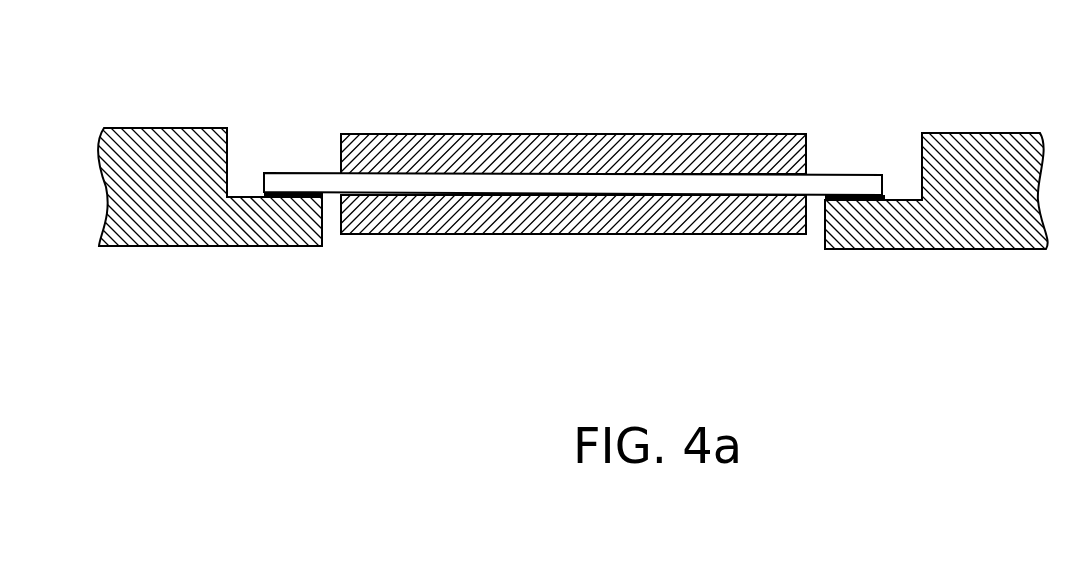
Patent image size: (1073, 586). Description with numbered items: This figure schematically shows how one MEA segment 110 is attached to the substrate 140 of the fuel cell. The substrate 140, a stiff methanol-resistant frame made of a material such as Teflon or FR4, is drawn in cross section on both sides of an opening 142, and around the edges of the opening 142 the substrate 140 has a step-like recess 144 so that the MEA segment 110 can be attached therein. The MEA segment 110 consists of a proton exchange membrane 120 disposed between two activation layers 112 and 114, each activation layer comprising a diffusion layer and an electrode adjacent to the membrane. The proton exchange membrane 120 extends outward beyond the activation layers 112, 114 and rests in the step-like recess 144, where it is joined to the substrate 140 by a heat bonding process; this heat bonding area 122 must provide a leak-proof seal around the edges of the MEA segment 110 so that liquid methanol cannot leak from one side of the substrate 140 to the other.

The MEA segment 110 is at (565, 110).
The activation layer 112 is at (652, 140).
The activation layer 114 is at (590, 233).
The proton exchange membrane 120 is at (815, 182).
The heat bonding area 122 is at (288, 198).
The substrate 140 is at (227, 222).
The opening 142 is at (455, 313).
The step-like recess 144 is at (245, 192).